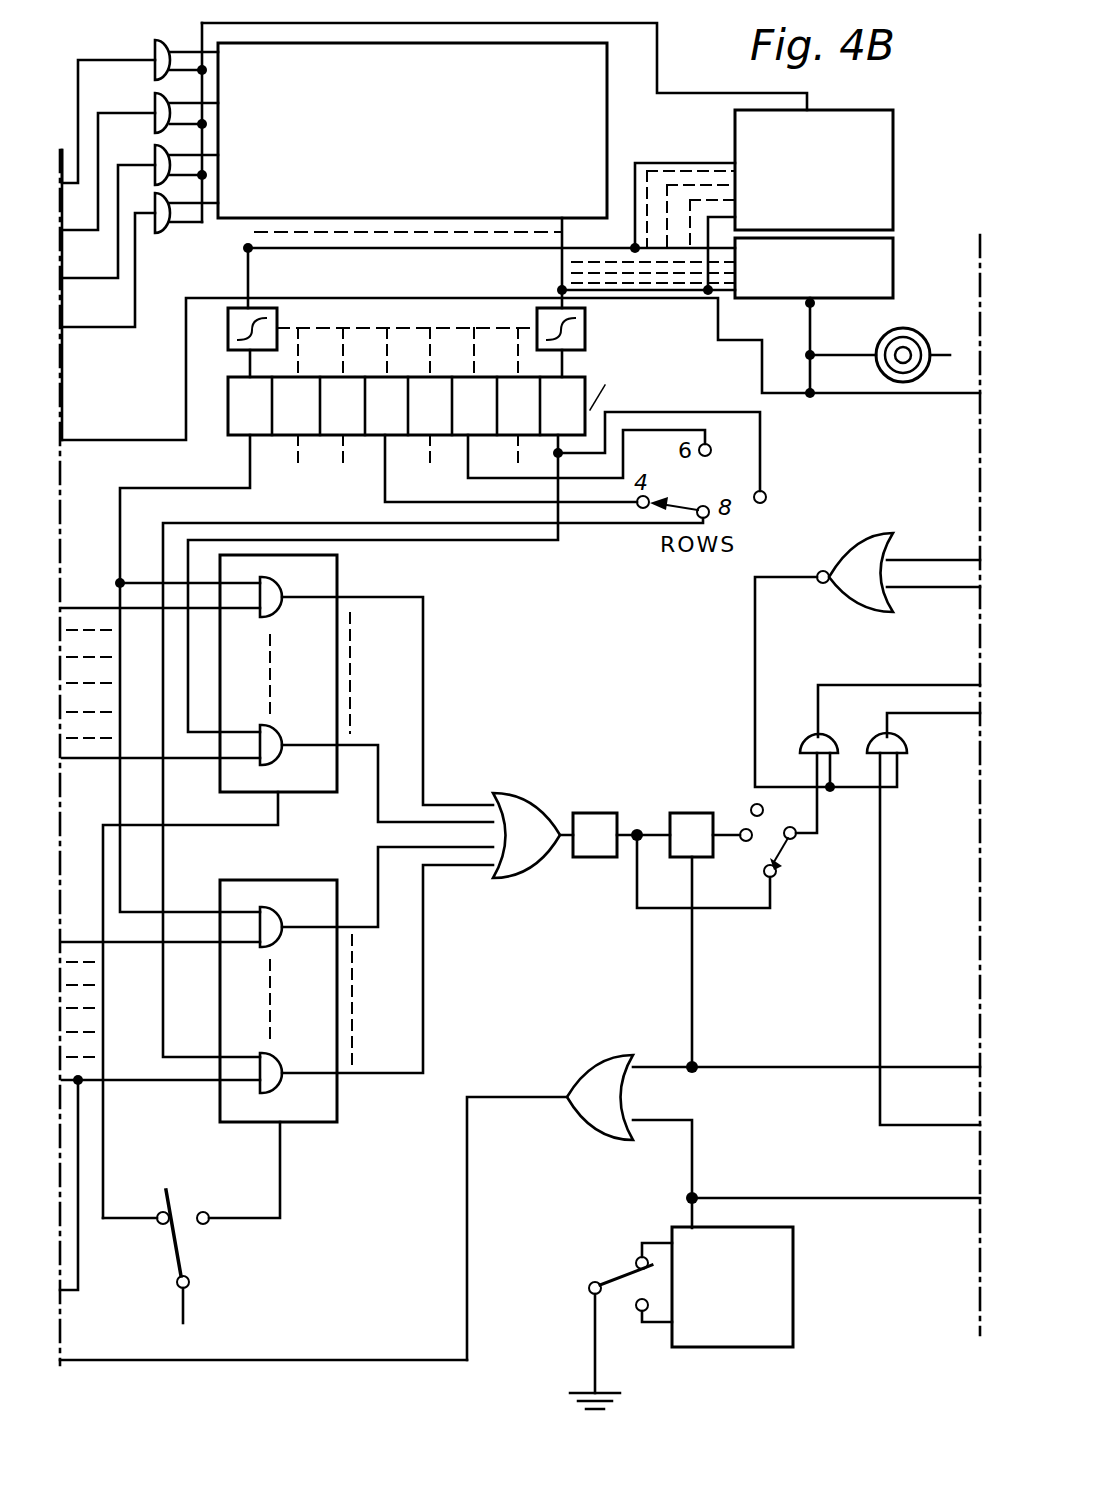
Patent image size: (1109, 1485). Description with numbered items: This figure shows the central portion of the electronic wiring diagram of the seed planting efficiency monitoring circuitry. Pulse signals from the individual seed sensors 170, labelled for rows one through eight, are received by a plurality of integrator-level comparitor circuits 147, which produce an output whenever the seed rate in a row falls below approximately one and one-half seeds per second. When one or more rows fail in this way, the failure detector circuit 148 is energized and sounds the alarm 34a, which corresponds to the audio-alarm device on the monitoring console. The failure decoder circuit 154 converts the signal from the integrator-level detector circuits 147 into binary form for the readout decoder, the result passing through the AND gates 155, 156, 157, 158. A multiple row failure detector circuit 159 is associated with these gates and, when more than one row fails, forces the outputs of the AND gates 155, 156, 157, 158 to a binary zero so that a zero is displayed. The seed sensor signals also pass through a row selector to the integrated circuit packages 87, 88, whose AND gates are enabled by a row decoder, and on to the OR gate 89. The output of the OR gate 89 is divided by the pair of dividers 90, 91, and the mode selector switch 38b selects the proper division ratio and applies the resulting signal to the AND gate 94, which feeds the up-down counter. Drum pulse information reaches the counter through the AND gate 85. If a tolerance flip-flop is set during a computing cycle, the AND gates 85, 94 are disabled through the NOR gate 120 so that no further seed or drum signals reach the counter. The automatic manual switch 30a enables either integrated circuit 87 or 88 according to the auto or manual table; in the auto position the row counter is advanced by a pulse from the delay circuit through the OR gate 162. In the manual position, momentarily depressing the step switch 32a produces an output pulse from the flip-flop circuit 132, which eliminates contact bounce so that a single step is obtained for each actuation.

The failure decoder circuit 154 is at (607, 130).
The AND gate 155 is at (160, 48).
The AND gate 156 is at (156, 100).
The AND gate 157 is at (158, 152).
The AND gate 158 is at (165, 233).
The multiple row failure detector circuit 159 is at (893, 190).
The failure detector circuit 148 is at (895, 258).
The integrator-level comparitor circuit 147 is at (248, 308).
The seed sensors 170 is at (228, 400).
The alarm 34a is at (892, 383).
The NOR gate 120 is at (880, 512).
The integrated circuit package 87 is at (337, 576).
The integrated circuit package 88 is at (322, 1105).
The OR gate 89 is at (530, 772).
The divider 90 is at (592, 813).
The divider 91 is at (688, 813).
The AND gate 94 is at (810, 737).
The AND gate 85 is at (905, 745).
The mode selector switch 38b is at (825, 822).
The OR gate 162 is at (590, 1082).
The flip-flop circuit 132 is at (793, 1278).
The automatic manual switch 30a is at (178, 1238).
The step switch 32a is at (590, 1290).